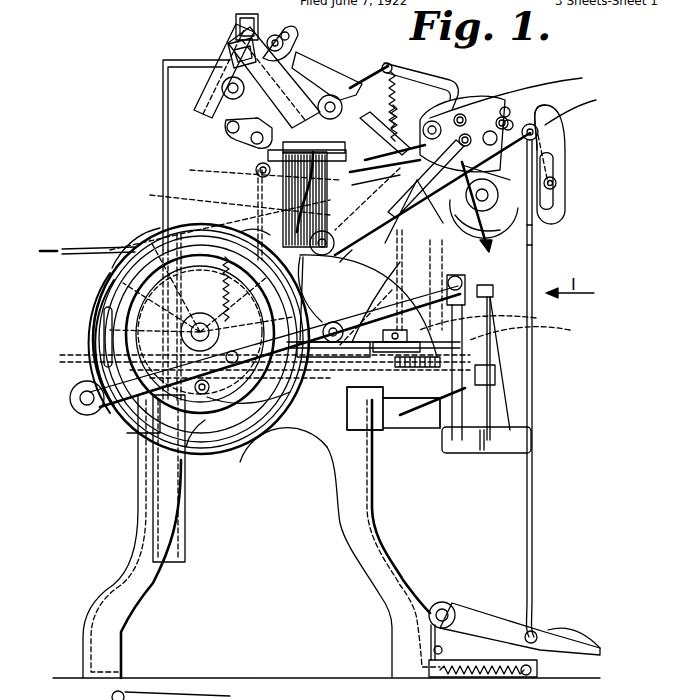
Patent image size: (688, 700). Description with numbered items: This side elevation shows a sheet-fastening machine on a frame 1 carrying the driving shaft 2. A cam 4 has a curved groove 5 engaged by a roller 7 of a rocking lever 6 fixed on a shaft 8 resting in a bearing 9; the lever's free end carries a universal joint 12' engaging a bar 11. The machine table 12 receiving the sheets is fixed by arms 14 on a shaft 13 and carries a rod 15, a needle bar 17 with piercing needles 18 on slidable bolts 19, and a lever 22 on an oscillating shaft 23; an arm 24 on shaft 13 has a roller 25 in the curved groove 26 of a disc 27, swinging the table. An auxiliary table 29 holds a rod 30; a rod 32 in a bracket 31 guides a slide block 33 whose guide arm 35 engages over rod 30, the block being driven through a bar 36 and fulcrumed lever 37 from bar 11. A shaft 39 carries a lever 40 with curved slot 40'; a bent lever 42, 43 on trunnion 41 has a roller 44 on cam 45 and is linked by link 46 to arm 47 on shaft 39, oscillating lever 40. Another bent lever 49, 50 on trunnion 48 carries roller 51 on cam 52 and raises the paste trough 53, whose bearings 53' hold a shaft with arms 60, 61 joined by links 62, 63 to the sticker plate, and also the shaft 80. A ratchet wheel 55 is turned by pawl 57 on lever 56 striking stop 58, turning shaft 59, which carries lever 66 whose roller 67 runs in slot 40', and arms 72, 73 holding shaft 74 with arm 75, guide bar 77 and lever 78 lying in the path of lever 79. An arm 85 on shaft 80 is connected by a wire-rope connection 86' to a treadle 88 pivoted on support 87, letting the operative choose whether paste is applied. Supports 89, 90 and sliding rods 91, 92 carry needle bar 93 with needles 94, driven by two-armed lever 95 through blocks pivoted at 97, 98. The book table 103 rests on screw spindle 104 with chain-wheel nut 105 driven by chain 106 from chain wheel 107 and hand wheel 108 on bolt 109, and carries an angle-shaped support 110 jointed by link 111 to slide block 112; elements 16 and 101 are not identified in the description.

The frame 1 is at (190, 152).
The main shaft 2 is at (200, 313).
The hand wheel 4 is at (250, 450).
The wheel rim 5 is at (285, 405).
The lever 6 is at (190, 450).
The roller 7 is at (205, 398).
The pivot lever 8 is at (88, 415).
The bracket 9 is at (117, 415).
The rack 11 is at (490, 342).
The pitman 12 is at (428, 179).
The pitman pivot 12' is at (481, 348).
The pivot 13 is at (332, 321).
The link 14 is at (352, 250).
The guide 15 is at (382, 208).
The guide 16 is at (402, 210).
The lever 17 is at (373, 238).
The arm 18 is at (480, 230).
The slide 19 is at (430, 322).
The link 22 is at (338, 262).
The arc 23 is at (392, 270).
The cam ring 24 is at (312, 388).
The spring 25 is at (232, 310).
The guard 26 is at (98, 284).
The bracket 27 is at (150, 228).
The clamp 29 is at (500, 368).
The rod 30 is at (536, 318).
The link 31 is at (486, 176).
The rod 32 is at (536, 247).
The cam 33 is at (486, 216).
The block 35 is at (392, 420).
The bracket 36 is at (493, 287).
The lever 37 is at (500, 350).
The pin 39 is at (556, 184).
The loop 40 is at (567, 164).
The loop end 40' is at (567, 127).
The roller 41 is at (330, 230).
The bar 42 is at (262, 222).
The link 43 is at (365, 230).
The rod 44 is at (212, 225).
The rod 45 is at (104, 320).
The lever 46 is at (395, 176).
The lever 47 is at (552, 145).
The bracket 48 is at (268, 155).
The pin 49 is at (268, 178).
The pawl 50 is at (355, 147).
The block 51 is at (342, 400).
The cam 52 is at (210, 288).
The pin 53 is at (525, 97).
The pin 53' is at (549, 115).
The plate 55 is at (480, 118).
The gear 56 is at (430, 122).
The lever 57 is at (400, 152).
The bar 58 is at (368, 88).
The pin 59 is at (512, 122).
The pawl 60 is at (502, 110).
The pawl 61 is at (502, 116).
The pawl 62 is at (445, 85).
The pawl 63 is at (452, 110).
The cam 66 is at (493, 189).
The pin 67 is at (558, 180).
The pawl 72 is at (462, 100).
The pawl 73 is at (464, 130).
The arm 74 is at (404, 90).
The lever 75 is at (385, 162).
The needle head 77 is at (320, 190).
The spring 78 is at (393, 134).
The spring 79 is at (393, 72).
The arm 80 is at (575, 80).
The arm 85 is at (579, 106).
The rod 86' is at (548, 388).
The spring 87 is at (447, 652).
The pedal 88 is at (490, 622).
The knife 89 is at (228, 44).
The knife 90 is at (234, 50).
The knife 91 is at (238, 28).
The knife 92 is at (240, 28).
The link 93 is at (272, 122).
The arm 94 is at (332, 95).
The arm 95 is at (208, 97).
The link 97 is at (272, 37).
The link 98 is at (275, 35).
The rod 101 is at (543, 232).
The needle 103 is at (92, 240).
The plate 104 is at (186, 530).
The rod 105 is at (108, 364).
The arch 106 is at (330, 440).
The column 107 is at (378, 448).
The rod 108 is at (536, 329).
The link 109 is at (392, 295).
The rod 110 is at (258, 180).
The rod 111 is at (185, 210).
The bracket 112 is at (253, 222).